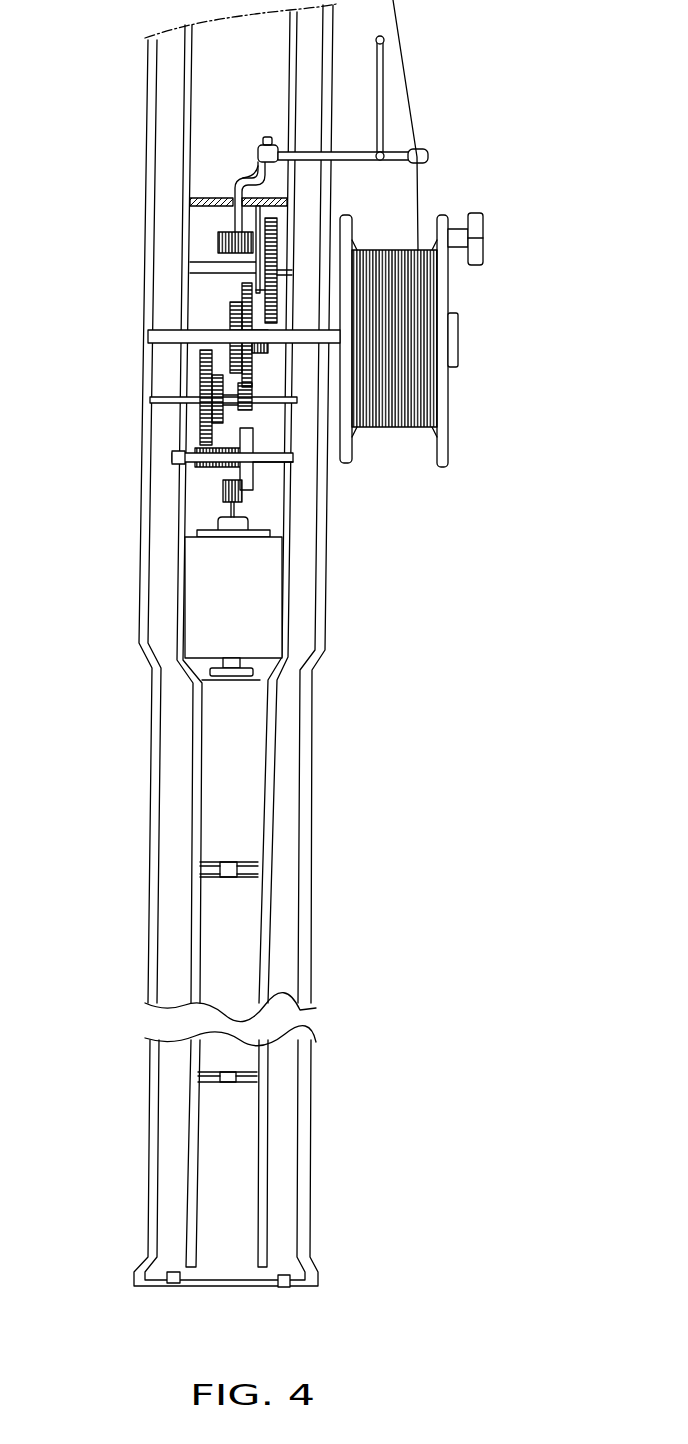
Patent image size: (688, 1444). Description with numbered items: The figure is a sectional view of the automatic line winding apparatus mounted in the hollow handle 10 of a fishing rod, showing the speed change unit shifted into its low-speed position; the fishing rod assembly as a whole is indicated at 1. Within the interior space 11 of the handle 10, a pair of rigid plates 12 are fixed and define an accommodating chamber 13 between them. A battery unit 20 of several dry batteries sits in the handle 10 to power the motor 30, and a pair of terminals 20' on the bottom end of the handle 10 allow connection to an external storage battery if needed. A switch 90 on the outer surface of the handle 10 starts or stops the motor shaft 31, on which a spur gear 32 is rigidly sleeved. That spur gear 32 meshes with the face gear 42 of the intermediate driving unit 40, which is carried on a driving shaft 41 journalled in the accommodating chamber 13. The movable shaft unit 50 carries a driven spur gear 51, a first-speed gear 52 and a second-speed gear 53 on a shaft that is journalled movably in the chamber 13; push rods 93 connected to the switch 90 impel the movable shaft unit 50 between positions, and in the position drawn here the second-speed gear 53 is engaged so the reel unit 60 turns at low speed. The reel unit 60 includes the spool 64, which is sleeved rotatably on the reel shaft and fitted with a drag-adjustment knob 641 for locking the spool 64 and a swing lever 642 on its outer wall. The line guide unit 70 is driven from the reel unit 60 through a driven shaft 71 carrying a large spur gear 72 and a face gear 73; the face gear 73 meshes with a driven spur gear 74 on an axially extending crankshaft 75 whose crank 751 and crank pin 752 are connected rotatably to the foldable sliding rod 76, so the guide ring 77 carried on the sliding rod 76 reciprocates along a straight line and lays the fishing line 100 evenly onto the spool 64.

The outer tube 1 is at (137, 104).
The hollow handle 10 is at (148, 290).
The interior space 11 is at (297, 567).
The rigid plates 12 is at (105, 626).
The accommodating chamber 13 is at (255, 503).
The battery unit 20 is at (291, 938).
The terminals 20' is at (195, 1299).
The motor 30 is at (275, 652).
The motor shaft 31 is at (232, 515).
The spur gear 32 is at (225, 495).
The intermediate driving unit 40 is at (240, 465).
The driving shaft 41 is at (283, 468).
The face gear 42 is at (256, 452).
The movable shaft unit 50 is at (175, 398).
The driven spur gear 51 is at (200, 372).
The first-speed gear 52 is at (213, 420).
The second-speed gear 53 is at (252, 392).
The reel unit 60 is at (148, 337).
The spool 64 is at (440, 425).
The drag-adjustment knob 641 is at (458, 340).
The swing lever 642 is at (483, 238).
The line guide unit 70 is at (205, 192).
The driven shaft 71 is at (285, 270).
The large spur gear 72 is at (280, 225).
The face gear 73 is at (190, 262).
The driven spur gear 74 is at (216, 240).
The crankshaft 75 is at (238, 195).
The crank 751 is at (251, 175).
The crank pin 752 is at (268, 137).
The sliding rod 76 is at (383, 108).
The guide ring 77 is at (428, 156).
The switch 90 is at (225, 460).
The push rods 93 is at (200, 432).
The fishing line 100 is at (407, 78).